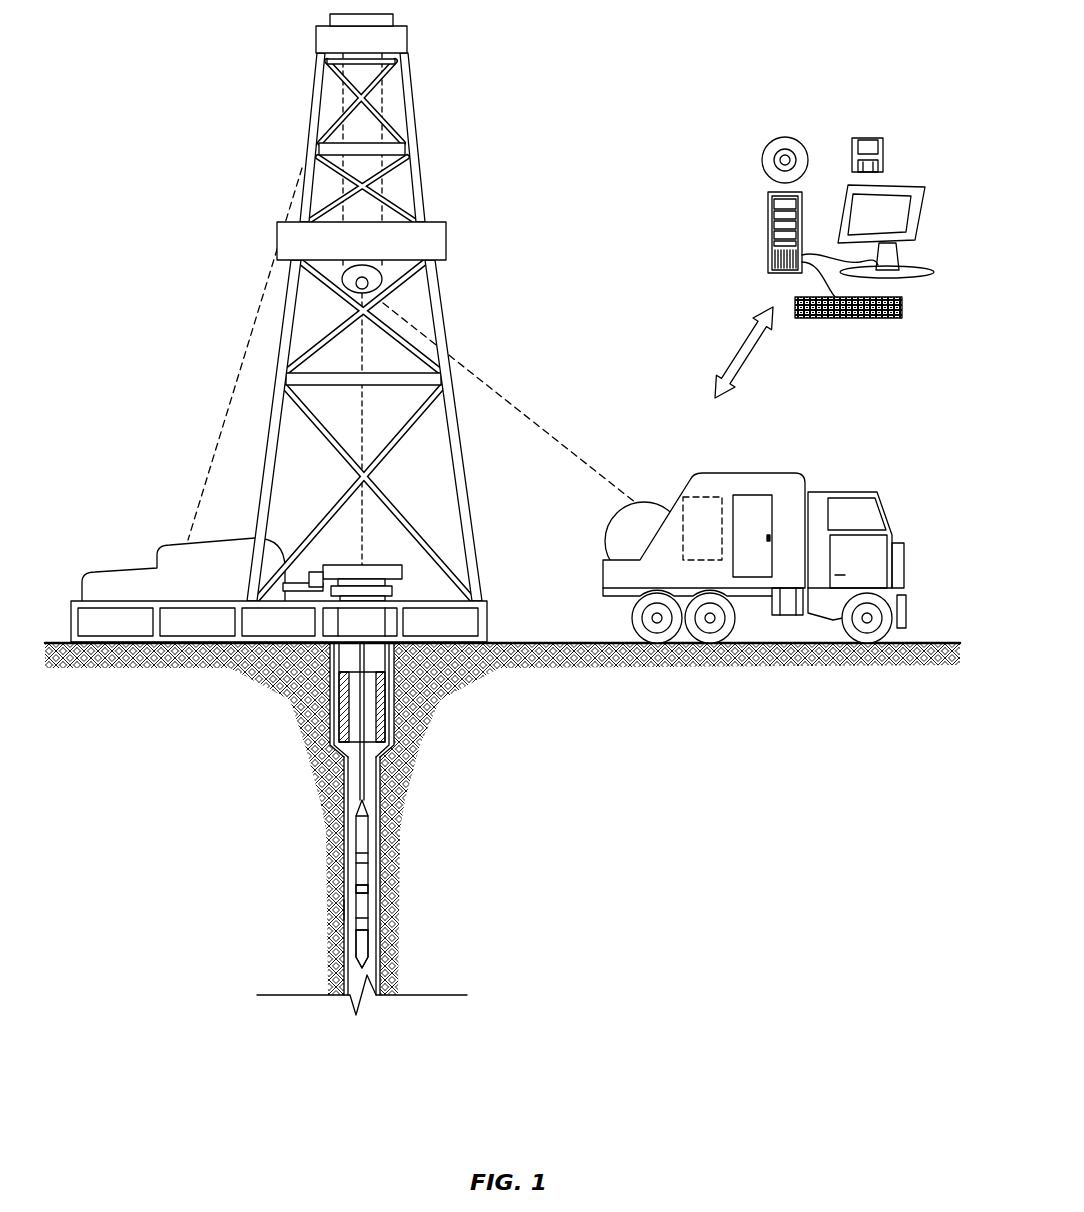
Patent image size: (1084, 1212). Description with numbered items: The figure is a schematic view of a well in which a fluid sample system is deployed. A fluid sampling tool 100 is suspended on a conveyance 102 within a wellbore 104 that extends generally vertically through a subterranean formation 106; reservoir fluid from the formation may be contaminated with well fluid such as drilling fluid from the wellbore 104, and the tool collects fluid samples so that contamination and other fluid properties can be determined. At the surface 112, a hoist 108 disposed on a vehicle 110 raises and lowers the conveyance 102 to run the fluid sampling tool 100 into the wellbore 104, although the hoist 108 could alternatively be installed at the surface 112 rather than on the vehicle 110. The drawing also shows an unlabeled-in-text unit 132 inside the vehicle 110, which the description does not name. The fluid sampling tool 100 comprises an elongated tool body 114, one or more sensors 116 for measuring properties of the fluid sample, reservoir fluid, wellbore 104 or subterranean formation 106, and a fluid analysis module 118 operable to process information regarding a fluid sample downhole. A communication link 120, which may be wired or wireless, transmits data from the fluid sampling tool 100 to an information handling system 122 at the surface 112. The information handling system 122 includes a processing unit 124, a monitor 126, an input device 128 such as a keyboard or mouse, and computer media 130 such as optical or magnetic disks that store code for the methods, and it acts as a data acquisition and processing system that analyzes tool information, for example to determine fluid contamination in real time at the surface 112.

The fluid sampling tool 100 is at (382, 890).
The conveyance 102 is at (360, 768).
The wellbore 104 is at (344, 822).
The subterranean formation 106 is at (565, 829).
The hoist 108 is at (608, 527).
The vehicle 110 is at (721, 532).
The surface 112 is at (913, 643).
The tool body 114 is at (342, 910).
The sensors 116 is at (368, 925).
The fluid analysis module 118 is at (357, 888).
The communication link 120 is at (750, 355).
The information handling system 122 is at (781, 238).
The processing unit 124 is at (768, 205).
The monitor 126 is at (901, 186).
The input device 128 is at (887, 318).
The computer media 130 is at (870, 138).
The surface processing unit 132 is at (703, 497).